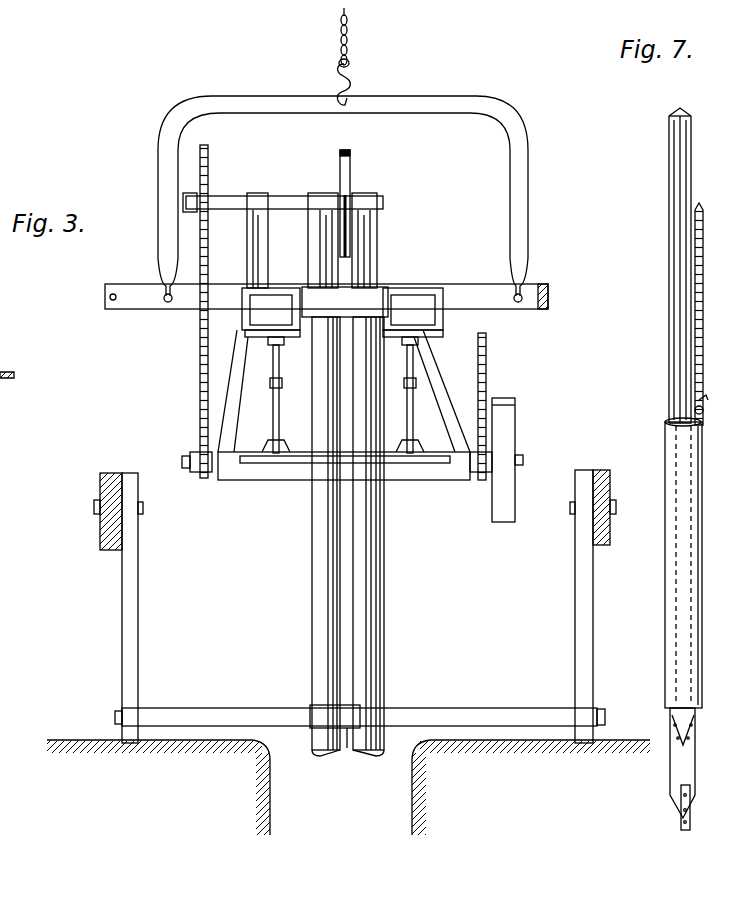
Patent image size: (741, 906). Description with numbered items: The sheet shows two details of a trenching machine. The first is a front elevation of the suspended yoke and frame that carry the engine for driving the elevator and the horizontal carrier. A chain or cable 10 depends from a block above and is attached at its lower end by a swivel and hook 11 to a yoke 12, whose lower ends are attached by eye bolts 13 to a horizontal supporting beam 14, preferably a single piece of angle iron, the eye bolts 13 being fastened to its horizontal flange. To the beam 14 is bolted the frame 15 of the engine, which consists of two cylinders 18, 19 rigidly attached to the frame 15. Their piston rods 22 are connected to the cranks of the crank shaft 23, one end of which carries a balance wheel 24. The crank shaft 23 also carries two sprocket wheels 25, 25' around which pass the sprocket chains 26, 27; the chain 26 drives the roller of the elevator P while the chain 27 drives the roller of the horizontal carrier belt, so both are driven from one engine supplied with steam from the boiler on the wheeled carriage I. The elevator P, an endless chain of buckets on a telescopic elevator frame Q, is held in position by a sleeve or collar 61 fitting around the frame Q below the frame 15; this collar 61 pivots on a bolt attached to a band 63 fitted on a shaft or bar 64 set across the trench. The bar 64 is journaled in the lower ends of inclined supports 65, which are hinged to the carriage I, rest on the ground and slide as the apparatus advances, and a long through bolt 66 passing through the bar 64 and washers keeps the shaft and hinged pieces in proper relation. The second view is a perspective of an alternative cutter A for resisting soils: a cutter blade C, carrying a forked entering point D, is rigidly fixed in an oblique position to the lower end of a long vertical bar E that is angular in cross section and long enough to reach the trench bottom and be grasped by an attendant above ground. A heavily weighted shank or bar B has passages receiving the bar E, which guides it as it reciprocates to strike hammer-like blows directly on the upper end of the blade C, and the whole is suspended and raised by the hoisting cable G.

In FIG. 3, the chain or cable 10 is at (352, 30).
In FIG. 3, the swivel and hook 11 is at (354, 77).
In FIG. 3, the yoke 12 is at (524, 216).
In FIG. 3, the eye bolts 13 is at (162, 308).
In FIG. 3, the horizontal supporting beam 14 is at (470, 287).
In FIG. 3, the frame of the engine 15 is at (236, 400).
In FIG. 3, the cylinder 18 is at (271, 316).
In FIG. 3, the cylinder 19 is at (413, 316).
In FIG. 3, the piston rods 22 is at (279, 403).
In FIG. 3, the crank shaft 23 is at (295, 463).
In FIG. 3, the balance wheel 24 is at (507, 435).
In FIG. 3, the sprocket wheel 25 is at (197, 479).
In FIG. 3, the sprocket wheel 25' is at (476, 479).
In FIG. 3, the sprocket chain 26 is at (200, 325).
In FIG. 3, the sprocket chain 27 is at (487, 376).
In FIG. 3, the sleeve or collar 61 is at (322, 718).
In FIG. 3, the band 63 is at (349, 750).
In FIG. 3, the shaft or bar 64 is at (430, 708).
In FIG. 3, the inclined supports 65 is at (138, 632).
In FIG. 3, the through bolt 66 is at (605, 717).
In FIG. 3, the wheeled carriage I is at (100, 538).
In FIG. 3, the elevator P is at (375, 536).
In FIG. 3, the elevator frame Q is at (312, 588).
In FIG. 7, the cutter A is at (697, 565).
In FIG. 7, the weighted shank or bar B is at (665, 480).
In FIG. 7, the cutter blade C is at (682, 763).
In FIG. 7, the entering point D is at (681, 822).
In FIG. 7, the long vertical bar E is at (680, 330).
In FIG. 7, the hoisting cable G is at (703, 333).